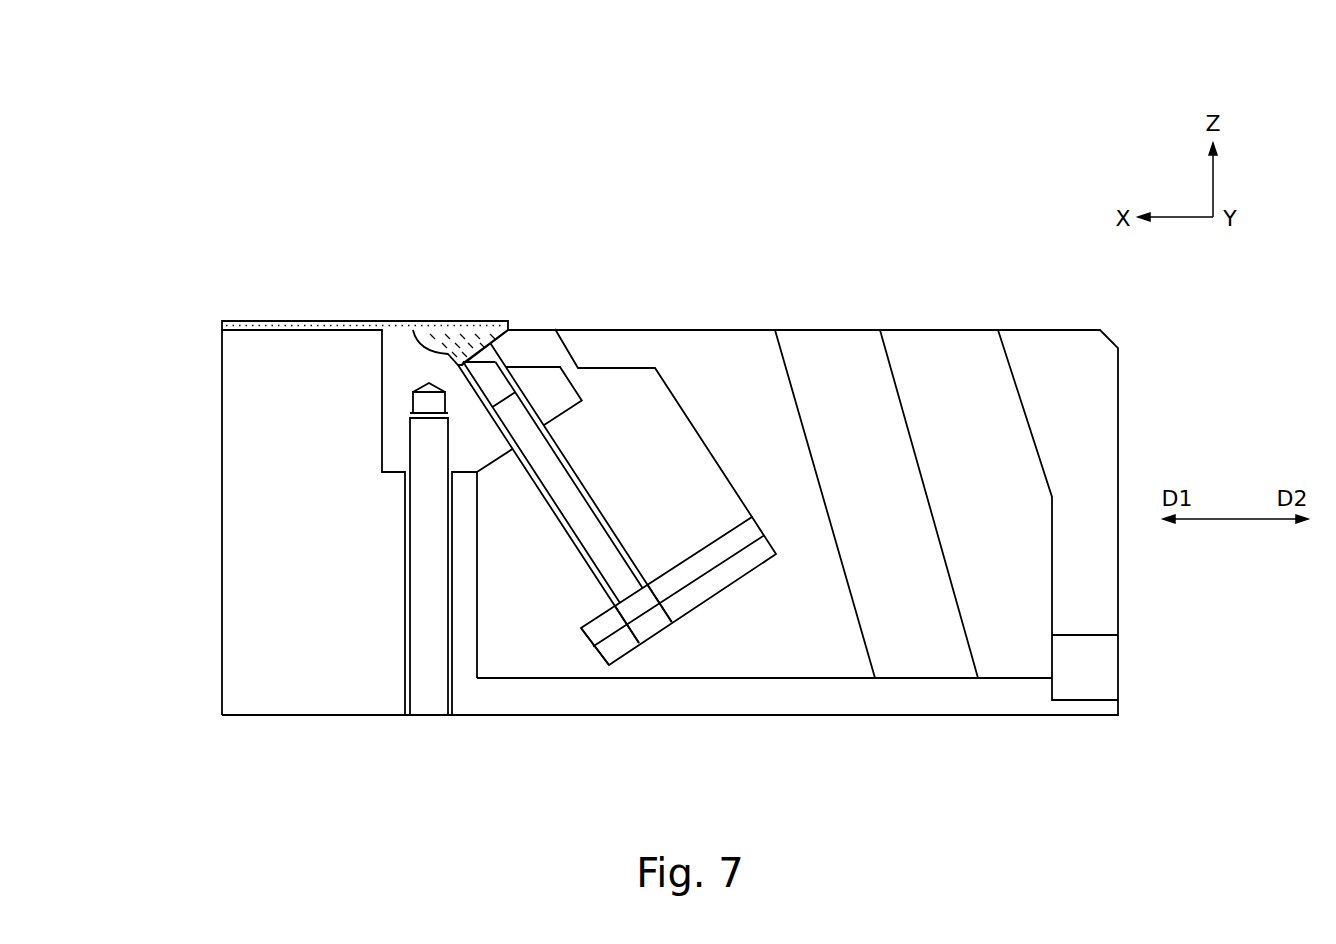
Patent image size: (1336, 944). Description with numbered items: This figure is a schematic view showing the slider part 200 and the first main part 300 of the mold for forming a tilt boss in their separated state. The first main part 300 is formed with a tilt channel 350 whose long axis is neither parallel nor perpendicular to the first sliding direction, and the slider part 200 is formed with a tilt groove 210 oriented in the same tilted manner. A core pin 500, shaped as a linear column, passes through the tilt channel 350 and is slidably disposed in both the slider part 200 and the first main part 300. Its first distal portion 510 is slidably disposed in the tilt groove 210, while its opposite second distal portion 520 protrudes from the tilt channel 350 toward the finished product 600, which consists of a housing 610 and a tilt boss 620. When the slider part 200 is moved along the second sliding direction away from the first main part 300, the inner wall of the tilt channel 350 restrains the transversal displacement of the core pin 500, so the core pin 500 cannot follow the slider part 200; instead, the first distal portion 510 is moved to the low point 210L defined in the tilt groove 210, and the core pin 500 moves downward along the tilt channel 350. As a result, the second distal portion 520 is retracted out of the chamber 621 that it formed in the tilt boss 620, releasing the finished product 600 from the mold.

The slider part 200 is at (1040, 408).
The tilt groove 210 is at (597, 675).
The low point 210L is at (670, 631).
The first main part 300 is at (215, 590).
The tilt channel 350 is at (477, 388).
The core pin 500 is at (548, 510).
The first distal portion 510 is at (643, 628).
The second distal portion 520 is at (492, 378).
The finished product 600 is at (333, 222).
The housing 610 is at (332, 326).
The tilt boss 620 is at (438, 338).
The chamber 621 is at (470, 330).